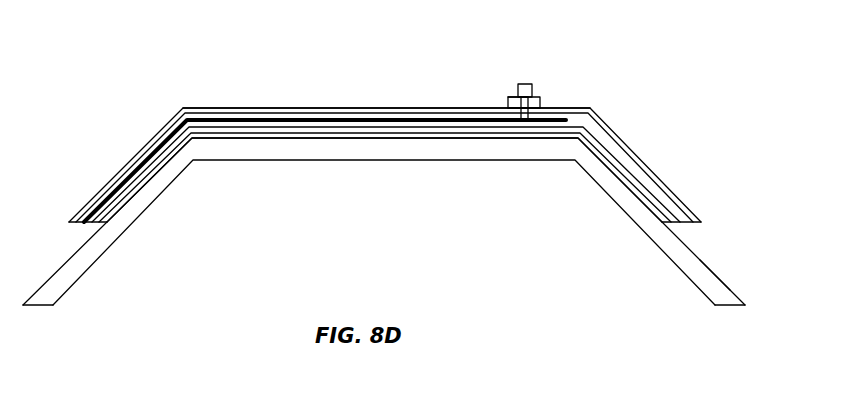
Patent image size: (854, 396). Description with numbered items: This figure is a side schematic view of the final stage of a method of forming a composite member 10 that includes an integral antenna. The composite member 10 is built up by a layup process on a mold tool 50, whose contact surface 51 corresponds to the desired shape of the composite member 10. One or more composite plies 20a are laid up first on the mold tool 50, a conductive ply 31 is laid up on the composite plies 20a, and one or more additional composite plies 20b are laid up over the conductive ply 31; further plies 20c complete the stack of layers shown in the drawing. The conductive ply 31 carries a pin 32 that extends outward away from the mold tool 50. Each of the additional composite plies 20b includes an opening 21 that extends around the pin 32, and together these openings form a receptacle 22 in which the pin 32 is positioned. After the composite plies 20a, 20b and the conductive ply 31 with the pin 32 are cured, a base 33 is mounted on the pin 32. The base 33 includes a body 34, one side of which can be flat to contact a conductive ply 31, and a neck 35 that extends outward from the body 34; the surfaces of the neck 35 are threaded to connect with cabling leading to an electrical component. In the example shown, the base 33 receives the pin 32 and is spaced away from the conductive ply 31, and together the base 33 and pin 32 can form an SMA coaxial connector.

The composite member 10 is at (119, 85).
The composite plies 20a is at (614, 159).
The additional composite plies 20b is at (273, 108).
The third layer 20c is at (130, 163).
The opening 21 is at (518, 107).
The receptacle 22 is at (550, 107).
The conductive ply 31 is at (363, 120).
The pin 32 is at (540, 100).
The base 33 is at (540, 107).
The body 34 is at (512, 100).
The neck 35 is at (528, 85).
The mold tool 50 is at (670, 242).
The contact surface 51 is at (713, 268).